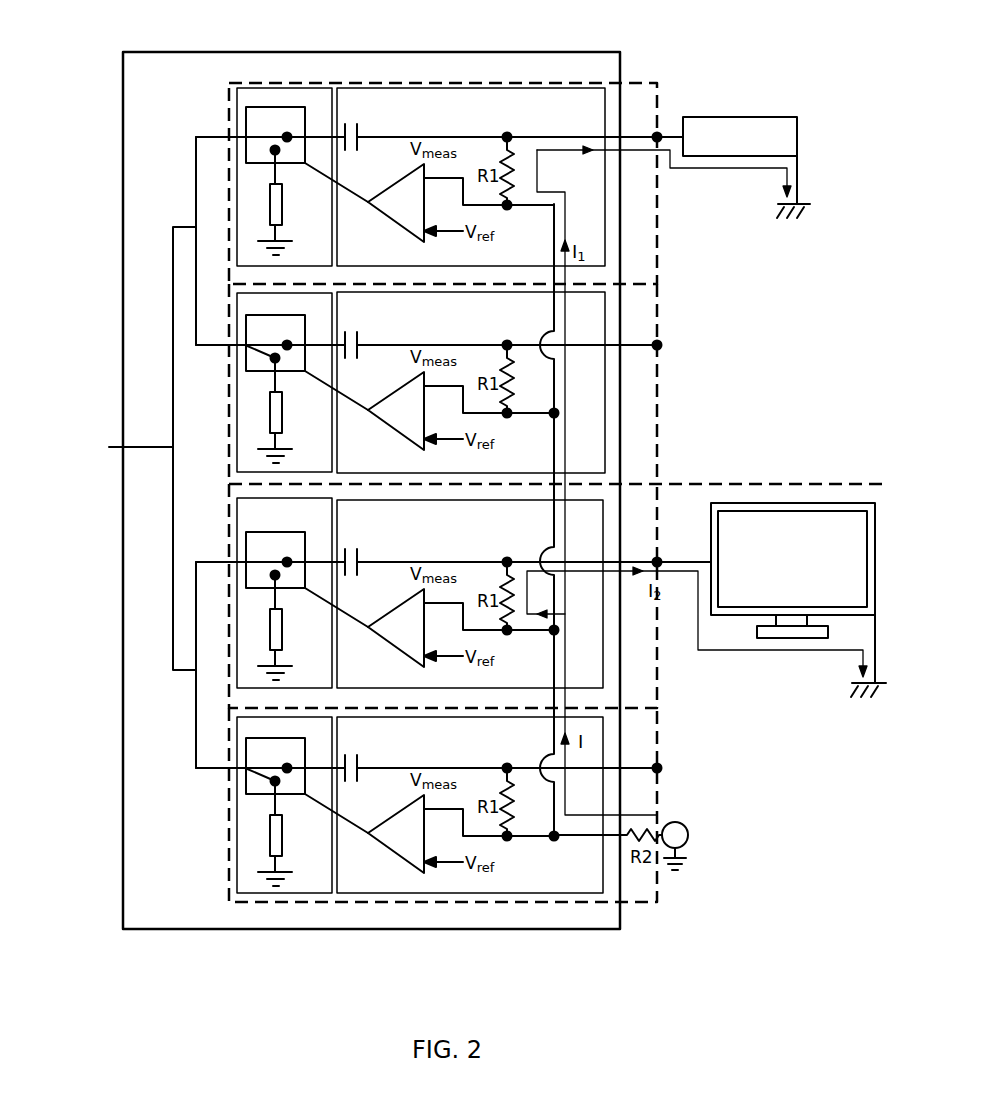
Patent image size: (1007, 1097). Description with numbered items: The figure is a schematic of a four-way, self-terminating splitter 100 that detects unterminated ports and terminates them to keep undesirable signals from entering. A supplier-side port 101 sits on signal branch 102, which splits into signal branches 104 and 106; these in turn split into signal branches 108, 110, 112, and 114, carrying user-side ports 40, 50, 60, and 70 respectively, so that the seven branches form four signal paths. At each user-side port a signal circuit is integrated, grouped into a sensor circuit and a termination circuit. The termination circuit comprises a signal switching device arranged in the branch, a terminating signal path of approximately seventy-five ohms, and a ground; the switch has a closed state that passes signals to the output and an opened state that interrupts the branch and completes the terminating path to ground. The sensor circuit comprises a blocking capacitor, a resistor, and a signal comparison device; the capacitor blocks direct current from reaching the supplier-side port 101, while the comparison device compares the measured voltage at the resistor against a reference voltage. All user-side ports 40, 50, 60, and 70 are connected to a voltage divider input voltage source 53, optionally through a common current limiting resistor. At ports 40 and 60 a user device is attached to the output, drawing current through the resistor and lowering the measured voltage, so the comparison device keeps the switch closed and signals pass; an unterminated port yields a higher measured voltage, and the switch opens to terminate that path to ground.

The self-terminating splitter 100 is at (332, 52).
The user-side port 40 is at (665, 226).
The user-side port 50 is at (665, 420).
The user-side port 60 is at (665, 683).
The user-side port 70 is at (665, 790).
The voltage source 53 is at (688, 826).
The supplier-side port 101 is at (101, 446).
The signal branch 102 is at (148, 436).
The signal branch 104 is at (179, 292).
The signal branch 106 is at (182, 607).
The signal branch 108 is at (434, 126).
The signal branch 110 is at (421, 353).
The signal branch 112 is at (449, 551).
The signal branch 114 is at (424, 779).